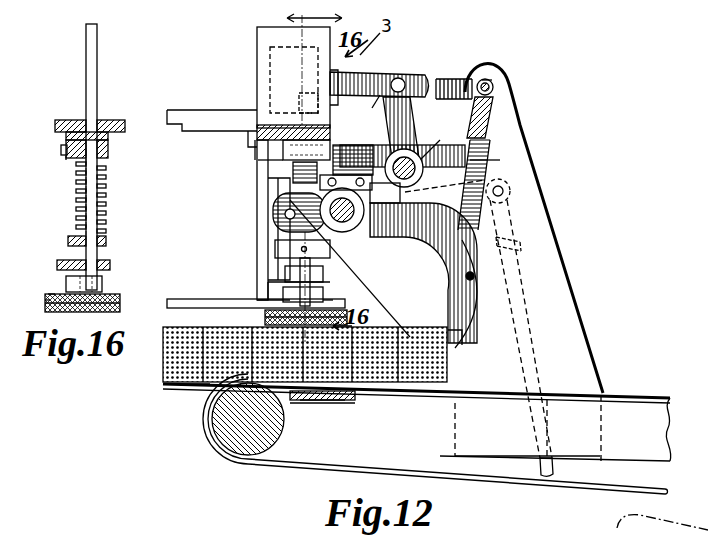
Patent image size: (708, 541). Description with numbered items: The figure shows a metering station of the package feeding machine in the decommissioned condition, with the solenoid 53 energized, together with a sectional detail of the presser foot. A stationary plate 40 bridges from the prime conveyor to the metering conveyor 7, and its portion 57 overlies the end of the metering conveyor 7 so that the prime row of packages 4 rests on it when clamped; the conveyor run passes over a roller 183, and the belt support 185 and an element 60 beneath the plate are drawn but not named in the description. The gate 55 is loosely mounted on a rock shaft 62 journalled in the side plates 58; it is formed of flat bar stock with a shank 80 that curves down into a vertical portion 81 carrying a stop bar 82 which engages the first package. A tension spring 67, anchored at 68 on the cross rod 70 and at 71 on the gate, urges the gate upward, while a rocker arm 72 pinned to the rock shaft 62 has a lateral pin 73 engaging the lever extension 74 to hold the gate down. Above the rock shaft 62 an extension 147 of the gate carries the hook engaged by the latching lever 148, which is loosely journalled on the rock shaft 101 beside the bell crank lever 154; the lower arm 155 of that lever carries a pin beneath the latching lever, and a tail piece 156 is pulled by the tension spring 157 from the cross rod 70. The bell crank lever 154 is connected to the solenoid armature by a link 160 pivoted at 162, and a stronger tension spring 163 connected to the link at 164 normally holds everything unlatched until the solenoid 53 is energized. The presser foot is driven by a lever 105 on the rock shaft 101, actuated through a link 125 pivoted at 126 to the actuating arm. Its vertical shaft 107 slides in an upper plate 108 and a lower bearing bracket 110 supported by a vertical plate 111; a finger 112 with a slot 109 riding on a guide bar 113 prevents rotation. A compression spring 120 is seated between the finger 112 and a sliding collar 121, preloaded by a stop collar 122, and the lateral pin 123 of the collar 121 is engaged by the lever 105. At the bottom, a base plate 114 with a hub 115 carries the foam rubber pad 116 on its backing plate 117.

In FIG. 12, the prime row of packages 4 is at (163, 345).
In FIG. 12, the metering conveyor 7 is at (641, 387).
In FIG. 12, the stationary plate 40 is at (203, 388).
In FIG. 12, the solenoid 53 is at (293, 30).
In FIG. 12, the gate 55 is at (475, 276).
In FIG. 12, the portion of stationary plate 57 is at (350, 392).
In FIG. 12, the side plates 58 is at (572, 322).
In FIG. 12, the guide plate 60 is at (335, 400).
In FIG. 12, the rock shaft 62 is at (350, 228).
In FIG. 12, the tension spring 67 is at (517, 160).
In FIG. 12, the spring anchor 68 is at (493, 100).
In FIG. 12, the cross rod 70 is at (497, 92).
In FIG. 12, the spring anchor on gate 71 is at (470, 254).
In FIG. 12, the rocker arm 72 is at (328, 232).
In FIG. 12, the lateral pin 73 is at (273, 222).
In FIG. 12, the lever extension 74 is at (293, 172).
In FIG. 12, the shank 80 is at (405, 232).
In FIG. 12, the vertical portion 81 is at (478, 310).
In FIG. 12, the stop bar 82 is at (458, 333).
In FIG. 12, the rock shaft 101 is at (423, 173).
In FIG. 16, the lever 105 is at (66, 158).
In FIG. 16, the vertical shaft 107 is at (90, 100).
In FIG. 12, the vertical shaft 107 is at (335, 262).
In FIG. 16, the upper plate 108 is at (75, 121).
In FIG. 12, the upper plate 108 is at (268, 126).
In FIG. 12, the slot 109 is at (247, 240).
In FIG. 16, the lower bearing bracket 110 is at (62, 263).
In FIG. 12, the lower bearing bracket 110 is at (278, 284).
In FIG. 12, the vertical plate 111 is at (257, 195).
In FIG. 16, the finger 112 is at (106, 240).
In FIG. 12, the finger 112 is at (285, 270).
In FIG. 12, the guide bar 113 is at (278, 208).
In FIG. 16, the base plate 114 is at (50, 293).
In FIG. 12, the base plate 114 is at (188, 298).
In FIG. 16, the hub 115 is at (102, 284).
In FIG. 12, the hub 115 is at (345, 294).
In FIG. 16, the pad 116 is at (98, 313).
In FIG. 12, the pad 116 is at (262, 316).
In FIG. 16, the backing plate 117 is at (46, 300).
In FIG. 12, the backing plate 117 is at (342, 303).
In FIG. 16, the compression spring 120 is at (76, 201).
In FIG. 16, the collar 121 is at (108, 149).
In FIG. 12, the collar 121 is at (300, 162).
In FIG. 16, the stop collar 122 is at (108, 135).
In FIG. 12, the stop collar 122 is at (292, 150).
In FIG. 16, the lateral pin 123 is at (61, 147).
In FIG. 12, the lateral pin 123 is at (255, 154).
In FIG. 12, the link 125 is at (548, 428).
In FIG. 12, the pivot connection 126 is at (511, 195).
In FIG. 12, the extension of gate 147 is at (385, 194).
In FIG. 12, the latching lever 148 is at (352, 130).
In FIG. 12, the bell crank lever 154 is at (410, 120).
In FIG. 12, the lower arm 155 is at (378, 128).
In FIG. 12, the tail piece 156 is at (428, 150).
In FIG. 12, the tension spring 157 is at (490, 120).
In FIG. 12, the link 160 is at (370, 72).
In FIG. 12, the pivot connection 162 is at (402, 80).
In FIG. 12, the tension spring 163 is at (480, 78).
In FIG. 12, the spring connection 164 is at (440, 85).
In FIG. 12, the roller 183 is at (286, 432).
In FIG. 12, the support 185 is at (482, 408).